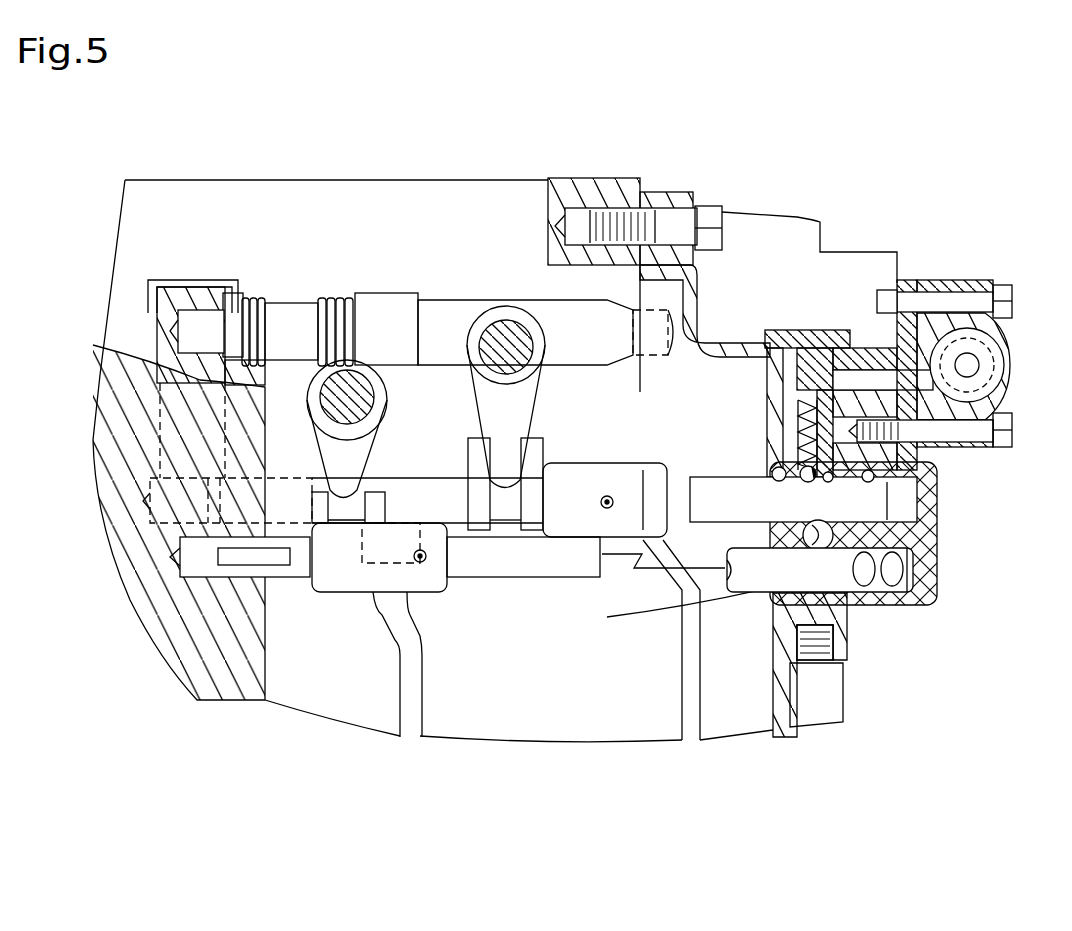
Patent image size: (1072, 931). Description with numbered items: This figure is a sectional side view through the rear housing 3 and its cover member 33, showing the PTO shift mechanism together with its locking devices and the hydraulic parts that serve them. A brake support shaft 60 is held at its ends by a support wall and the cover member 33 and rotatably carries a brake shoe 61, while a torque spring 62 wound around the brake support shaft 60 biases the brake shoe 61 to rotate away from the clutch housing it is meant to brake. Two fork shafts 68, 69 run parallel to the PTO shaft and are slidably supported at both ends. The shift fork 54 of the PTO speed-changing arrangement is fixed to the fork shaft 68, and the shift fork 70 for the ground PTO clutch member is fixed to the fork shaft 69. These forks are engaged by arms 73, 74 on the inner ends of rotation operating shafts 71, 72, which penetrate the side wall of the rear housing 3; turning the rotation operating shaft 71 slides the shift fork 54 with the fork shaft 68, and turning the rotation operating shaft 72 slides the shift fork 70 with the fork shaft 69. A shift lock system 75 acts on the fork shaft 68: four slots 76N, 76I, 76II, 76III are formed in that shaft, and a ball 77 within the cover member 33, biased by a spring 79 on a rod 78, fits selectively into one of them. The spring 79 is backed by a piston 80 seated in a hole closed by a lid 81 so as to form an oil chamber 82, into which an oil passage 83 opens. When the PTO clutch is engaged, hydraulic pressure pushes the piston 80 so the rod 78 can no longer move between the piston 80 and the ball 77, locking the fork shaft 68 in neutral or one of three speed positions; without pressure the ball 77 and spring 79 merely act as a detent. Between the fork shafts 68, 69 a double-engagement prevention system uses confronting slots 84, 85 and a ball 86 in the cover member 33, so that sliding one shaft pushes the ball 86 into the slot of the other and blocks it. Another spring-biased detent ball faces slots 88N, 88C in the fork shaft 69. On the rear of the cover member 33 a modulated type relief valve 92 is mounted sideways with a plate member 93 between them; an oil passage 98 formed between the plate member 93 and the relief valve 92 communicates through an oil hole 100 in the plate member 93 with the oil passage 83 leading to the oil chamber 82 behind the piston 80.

The rear housing 3 is at (597, 190).
The cover member 33 is at (930, 594).
The shift fork 54 is at (695, 666).
The brake support shaft 60 is at (445, 318).
The brake shoe 61 is at (395, 434).
The torque spring 62 is at (318, 332).
The fork shaft 68 is at (685, 482).
The fork shaft 69 is at (585, 565).
The shift fork 70 is at (412, 672).
The rotation operating shaft 71 is at (507, 338).
The rotation operating shaft 72 is at (320, 372).
The arm 73 is at (520, 410).
The arm 74 is at (332, 448).
The shift lock system 75 is at (762, 458).
The slot 76I is at (770, 482).
The slot 76II is at (822, 484).
The slot 76III is at (925, 518).
The slot 76N is at (915, 485).
The ball 77 is at (788, 443).
The rod 78 is at (782, 403).
The spring 79 is at (920, 458).
The piston 80 is at (770, 345).
The lid 81 is at (798, 347).
The oil chamber 82 is at (868, 377).
The oil passage 83 is at (907, 285).
The slot 84 is at (905, 552).
The slot 85 is at (867, 583).
The ball 86 is at (805, 529).
The slot 88C is at (887, 583).
The slot 88N is at (920, 607).
The modulated type relief valve 92 is at (973, 327).
The plate member 93 is at (905, 283).
The oil passage 98 is at (908, 370).
The oil hole 100 is at (987, 398).